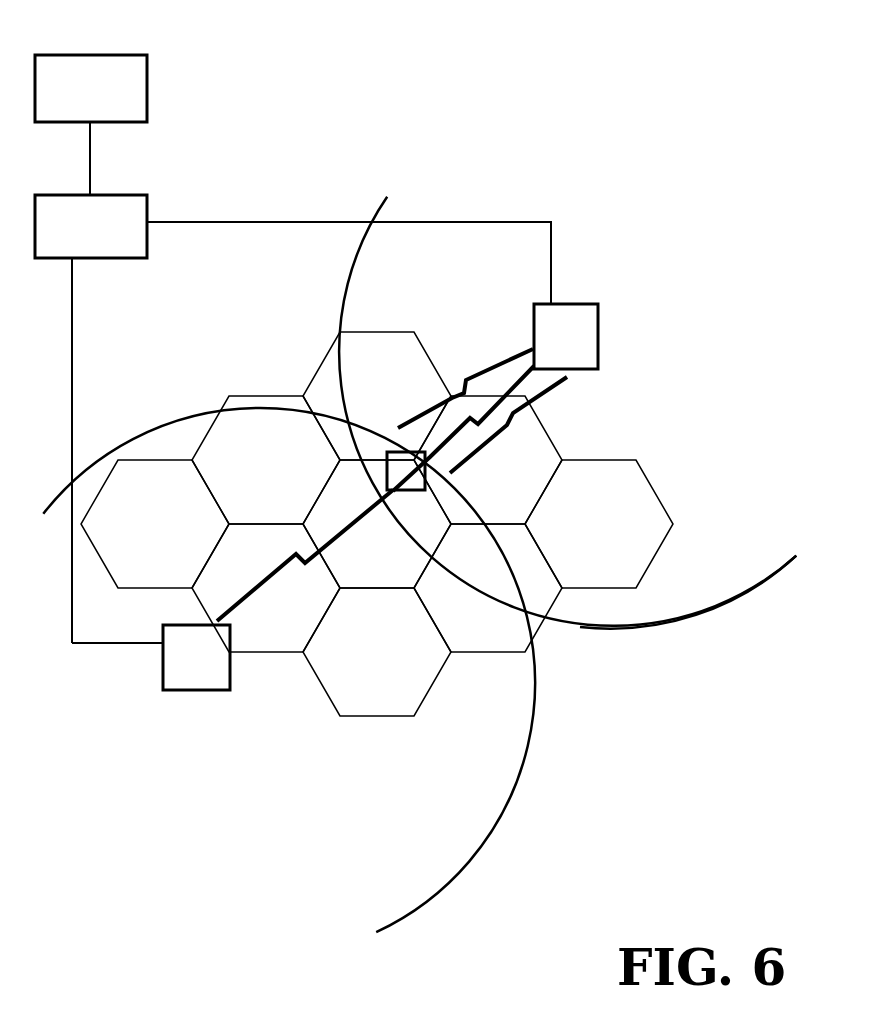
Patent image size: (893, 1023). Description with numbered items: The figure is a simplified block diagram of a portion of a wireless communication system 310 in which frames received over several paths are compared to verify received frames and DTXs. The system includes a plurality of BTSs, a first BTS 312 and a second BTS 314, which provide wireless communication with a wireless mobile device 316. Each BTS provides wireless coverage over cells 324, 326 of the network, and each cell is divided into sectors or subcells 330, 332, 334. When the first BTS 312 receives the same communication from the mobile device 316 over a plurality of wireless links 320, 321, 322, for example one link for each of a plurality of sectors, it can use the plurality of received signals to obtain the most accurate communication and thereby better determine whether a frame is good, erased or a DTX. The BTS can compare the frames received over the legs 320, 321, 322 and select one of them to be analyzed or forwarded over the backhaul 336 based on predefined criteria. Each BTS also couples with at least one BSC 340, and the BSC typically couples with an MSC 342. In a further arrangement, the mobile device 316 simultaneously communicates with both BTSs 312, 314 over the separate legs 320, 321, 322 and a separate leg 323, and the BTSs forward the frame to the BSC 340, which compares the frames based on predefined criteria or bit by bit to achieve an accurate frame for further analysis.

The wireless communication system 310 is at (546, 88).
The first BTS 312 is at (566, 303).
The BTS 314 is at (163, 665).
The wireless mobile device 316 is at (387, 463).
The wireless link 320 is at (468, 378).
The wireless link 321 is at (500, 381).
The wireless link 322 is at (568, 382).
The leg 323 is at (252, 660).
The cell 324 is at (653, 623).
The cell 326 is at (537, 717).
The sector 330 is at (332, 378).
The sector 332 is at (380, 560).
The sector 334 is at (544, 452).
The backhaul 336 is at (201, 222).
The BSC 340 is at (163, 174).
The MSC 342 is at (115, 54).